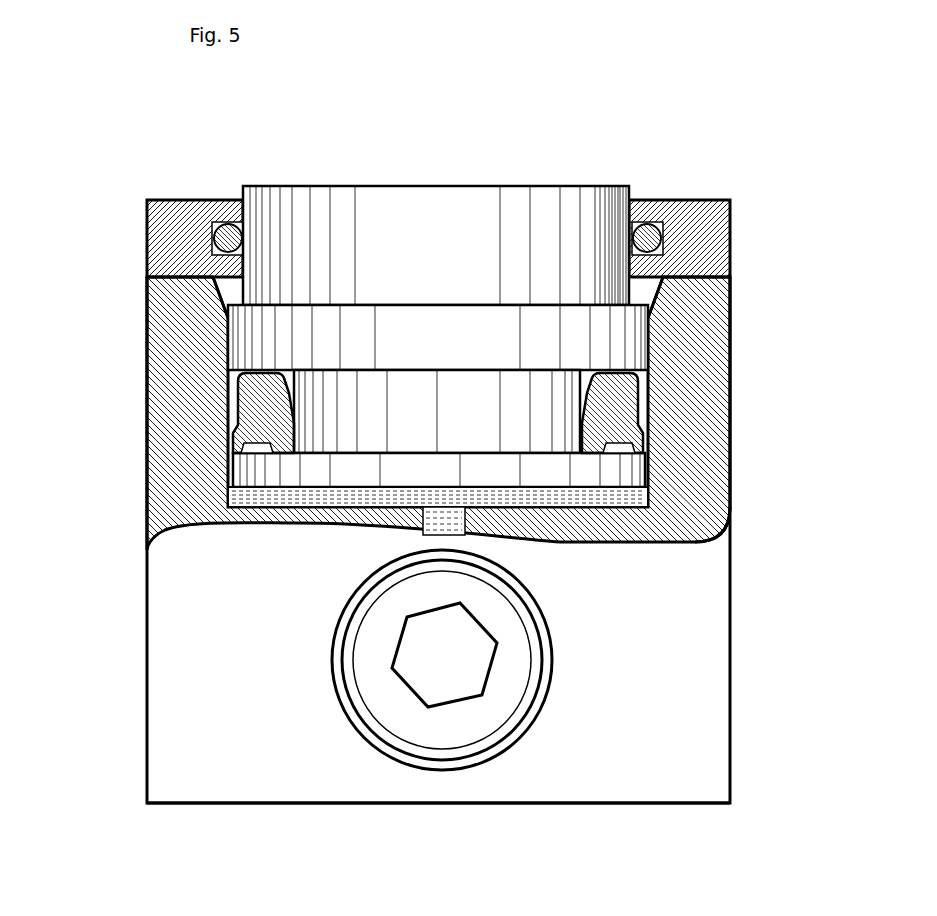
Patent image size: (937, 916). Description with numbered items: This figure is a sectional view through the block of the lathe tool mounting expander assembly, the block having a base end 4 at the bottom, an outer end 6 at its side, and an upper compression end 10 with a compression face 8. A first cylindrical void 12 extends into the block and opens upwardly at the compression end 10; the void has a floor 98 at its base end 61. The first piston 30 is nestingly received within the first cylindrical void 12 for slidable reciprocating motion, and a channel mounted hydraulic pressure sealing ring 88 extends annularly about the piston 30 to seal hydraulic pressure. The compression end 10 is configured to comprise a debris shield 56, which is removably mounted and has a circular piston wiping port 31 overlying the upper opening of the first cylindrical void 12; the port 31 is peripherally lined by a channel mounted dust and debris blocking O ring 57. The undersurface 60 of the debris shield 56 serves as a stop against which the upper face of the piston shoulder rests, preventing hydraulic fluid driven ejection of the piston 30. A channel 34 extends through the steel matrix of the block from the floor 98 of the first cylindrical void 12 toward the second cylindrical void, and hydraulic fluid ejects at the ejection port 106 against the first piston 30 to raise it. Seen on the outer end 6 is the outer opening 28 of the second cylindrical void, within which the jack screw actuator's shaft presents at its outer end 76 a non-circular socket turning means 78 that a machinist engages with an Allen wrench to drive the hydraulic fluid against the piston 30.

The base end 4 is at (450, 805).
The outer end 6 is at (215, 712).
The compression face 8 is at (178, 200).
The upper compression end 10 is at (735, 295).
The first cylindrical void 12 is at (230, 404).
The outer opening 28 is at (553, 655).
The first piston 30 is at (422, 215).
The piston wiping port 31 is at (632, 198).
The channel 34 is at (455, 522).
The debris shield 56 is at (167, 245).
The O ring 57 is at (228, 235).
The undersurface 60 is at (213, 305).
The base end 61 is at (731, 522).
The outer end 76 is at (390, 700).
The turning means 78 is at (450, 662).
The hydraulic pressure sealing ring 88 is at (238, 440).
The floor 98 is at (228, 500).
The ejection port 106 is at (440, 505).